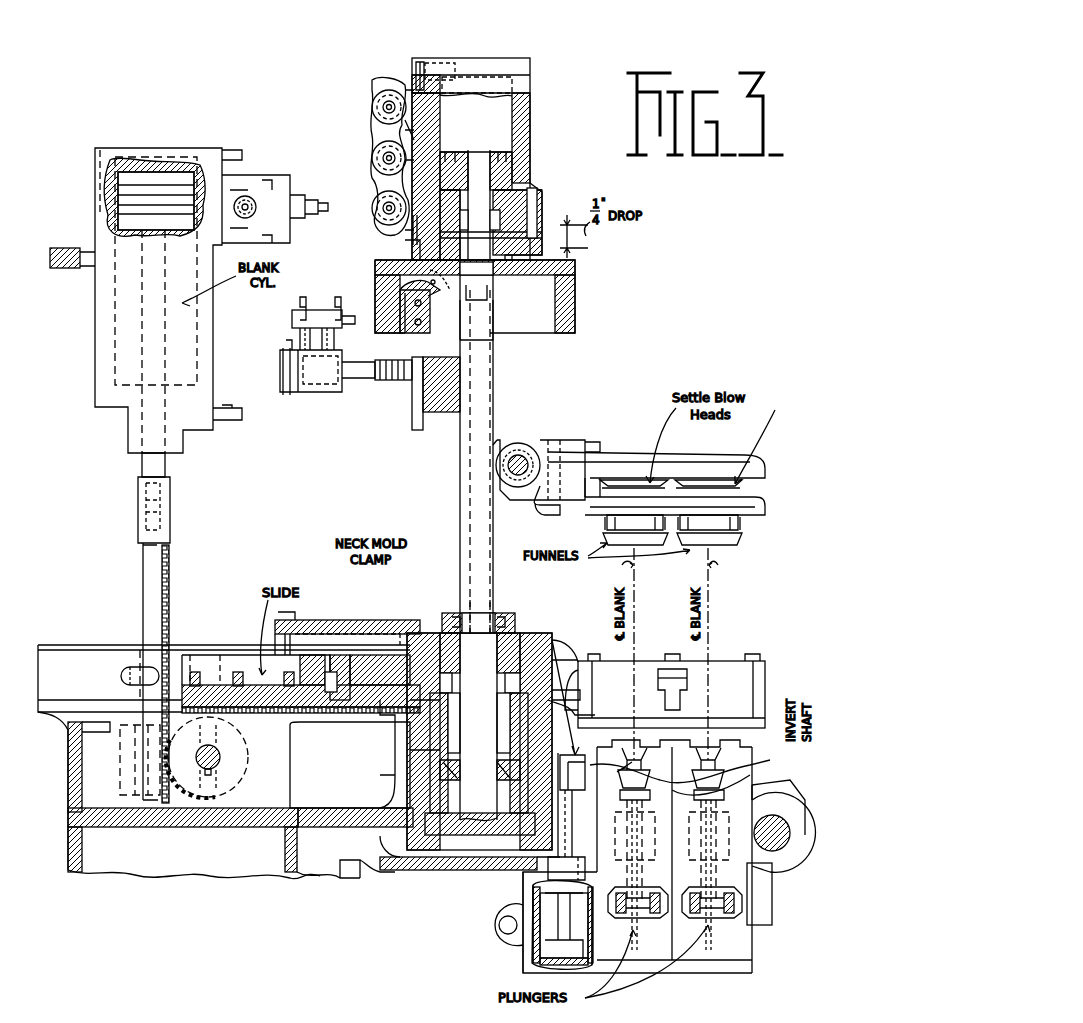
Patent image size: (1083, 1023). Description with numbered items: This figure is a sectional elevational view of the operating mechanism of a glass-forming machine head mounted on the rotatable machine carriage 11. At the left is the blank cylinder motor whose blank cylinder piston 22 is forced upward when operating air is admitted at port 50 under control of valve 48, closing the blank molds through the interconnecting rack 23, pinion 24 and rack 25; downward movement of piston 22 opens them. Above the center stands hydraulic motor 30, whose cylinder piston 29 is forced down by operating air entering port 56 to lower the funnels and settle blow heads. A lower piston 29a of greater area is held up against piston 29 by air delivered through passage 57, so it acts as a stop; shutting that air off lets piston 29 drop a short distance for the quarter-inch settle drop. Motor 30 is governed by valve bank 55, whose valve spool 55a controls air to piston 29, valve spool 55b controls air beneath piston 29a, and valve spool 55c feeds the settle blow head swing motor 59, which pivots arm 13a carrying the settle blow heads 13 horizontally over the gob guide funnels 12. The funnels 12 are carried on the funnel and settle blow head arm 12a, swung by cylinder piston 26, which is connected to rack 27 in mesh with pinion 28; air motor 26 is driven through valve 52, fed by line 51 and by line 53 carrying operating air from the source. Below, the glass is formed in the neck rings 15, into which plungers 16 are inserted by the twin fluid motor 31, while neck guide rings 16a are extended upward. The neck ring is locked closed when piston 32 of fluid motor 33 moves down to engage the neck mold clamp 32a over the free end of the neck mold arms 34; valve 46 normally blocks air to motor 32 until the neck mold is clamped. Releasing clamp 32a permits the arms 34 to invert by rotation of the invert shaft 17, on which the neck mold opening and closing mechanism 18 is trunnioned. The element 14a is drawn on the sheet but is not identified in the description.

The machine carriage 11 is at (68, 247).
The blank cylinder piston 22 is at (160, 185).
The valve 48 is at (265, 195).
The line 53 is at (305, 200).
The port 50 is at (238, 408).
The valve 52 is at (292, 318).
The line 51 is at (346, 316).
The cylinder piston 26 is at (307, 396).
The rack 27 is at (398, 380).
The pinion 28 is at (413, 428).
The pinion 24 is at (238, 735).
The rack 23 is at (170, 595).
The rack 25 is at (350, 707).
The neck mold clamp 32a is at (452, 630).
The hydraulic motor 30 is at (532, 122).
The port 56 is at (433, 58).
The cylinder piston 29 is at (512, 170).
The lower piston 29a is at (542, 220).
The passage 57 is at (410, 240).
The valve bank 55 is at (374, 141).
The valve spool 55a is at (388, 90).
The valve spool 55b is at (380, 150).
The valve spool 55c is at (380, 212).
The funnel and settle blow head arm 12a is at (538, 448).
The settle blow head swing motor 59 is at (566, 438).
The settle blow heads 13 is at (762, 480).
The arm 13a is at (650, 458).
The gob guide funnels 12 is at (742, 541).
The neck mold block 14a is at (762, 666).
The double neck rings 15 is at (695, 747).
The plungers 16 is at (632, 745).
The neck guide rings 16a is at (775, 768).
The twin fluid motor 31 is at (640, 920).
The neck mold opening and closing mechanism 18 is at (786, 868).
The invert shaft 17 is at (775, 915).
The neck mold arms 34 is at (588, 757).
The fluid motor 33 is at (530, 882).
The valve 46 is at (495, 927).
The piston 32 is at (533, 948).